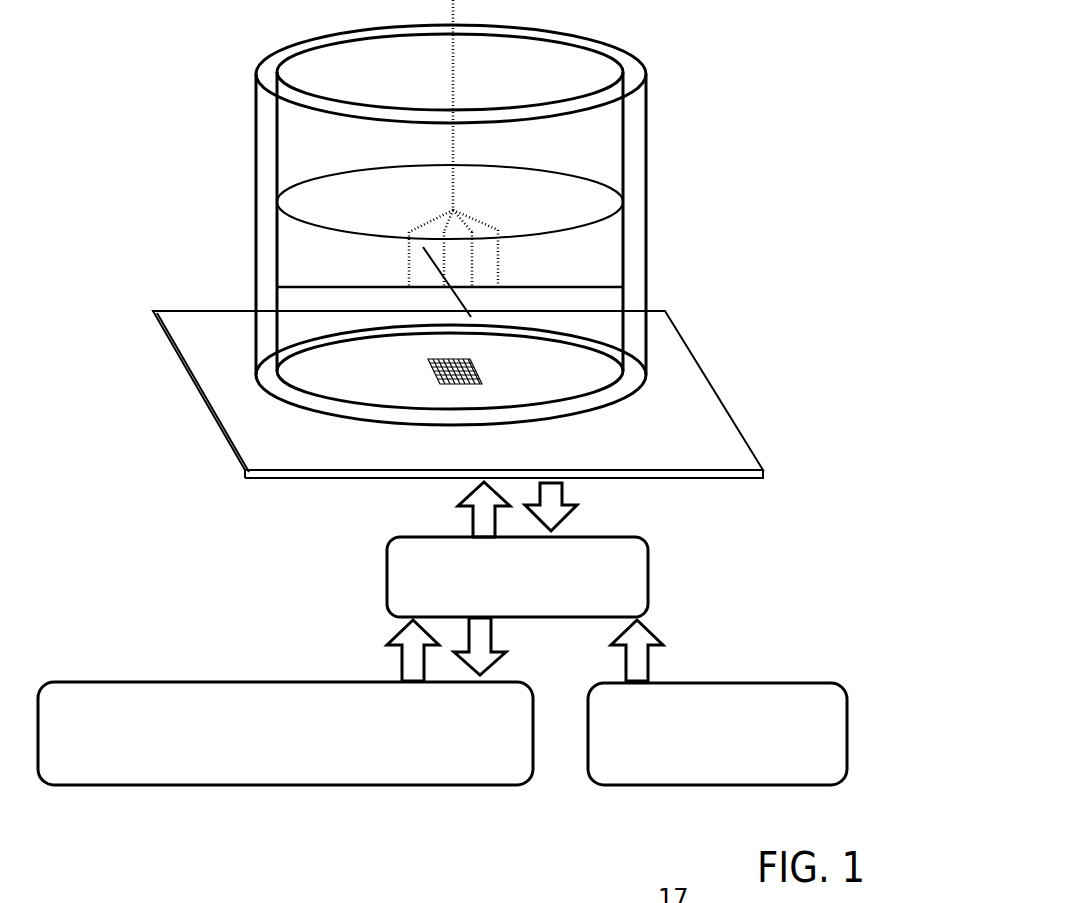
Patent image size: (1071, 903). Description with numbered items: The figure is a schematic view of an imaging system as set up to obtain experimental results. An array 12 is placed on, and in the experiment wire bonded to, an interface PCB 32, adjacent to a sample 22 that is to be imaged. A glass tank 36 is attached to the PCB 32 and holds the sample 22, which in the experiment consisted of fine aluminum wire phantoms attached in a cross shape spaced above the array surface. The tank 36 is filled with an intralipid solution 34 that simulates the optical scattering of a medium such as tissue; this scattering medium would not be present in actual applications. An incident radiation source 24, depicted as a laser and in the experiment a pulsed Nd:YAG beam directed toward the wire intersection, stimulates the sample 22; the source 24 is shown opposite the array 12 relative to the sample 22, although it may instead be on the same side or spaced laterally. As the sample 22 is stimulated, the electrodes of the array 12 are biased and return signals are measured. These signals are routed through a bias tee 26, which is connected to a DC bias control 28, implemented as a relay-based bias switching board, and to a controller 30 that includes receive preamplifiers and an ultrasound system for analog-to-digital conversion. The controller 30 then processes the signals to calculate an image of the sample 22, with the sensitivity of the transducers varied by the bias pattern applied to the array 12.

The array 12 is at (430, 370).
The sample 22 is at (550, 286).
The incident radiation source 24 is at (458, 70).
The bias tee 26 is at (632, 572).
The DC bias control 28 is at (823, 708).
The controller 30 is at (152, 694).
The interface PCB 32 is at (208, 345).
The intralipid solution 34 is at (580, 192).
The glass tank 36 is at (268, 165).